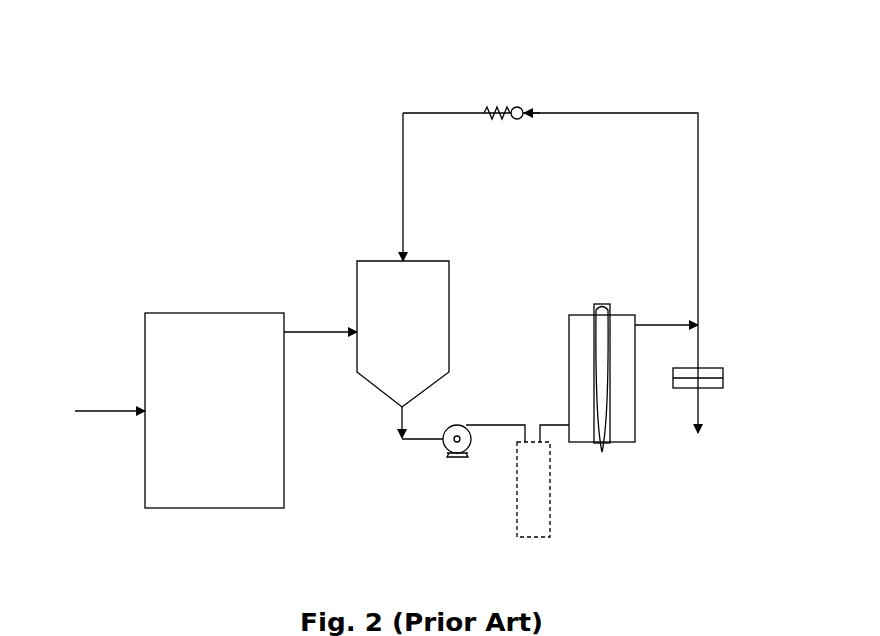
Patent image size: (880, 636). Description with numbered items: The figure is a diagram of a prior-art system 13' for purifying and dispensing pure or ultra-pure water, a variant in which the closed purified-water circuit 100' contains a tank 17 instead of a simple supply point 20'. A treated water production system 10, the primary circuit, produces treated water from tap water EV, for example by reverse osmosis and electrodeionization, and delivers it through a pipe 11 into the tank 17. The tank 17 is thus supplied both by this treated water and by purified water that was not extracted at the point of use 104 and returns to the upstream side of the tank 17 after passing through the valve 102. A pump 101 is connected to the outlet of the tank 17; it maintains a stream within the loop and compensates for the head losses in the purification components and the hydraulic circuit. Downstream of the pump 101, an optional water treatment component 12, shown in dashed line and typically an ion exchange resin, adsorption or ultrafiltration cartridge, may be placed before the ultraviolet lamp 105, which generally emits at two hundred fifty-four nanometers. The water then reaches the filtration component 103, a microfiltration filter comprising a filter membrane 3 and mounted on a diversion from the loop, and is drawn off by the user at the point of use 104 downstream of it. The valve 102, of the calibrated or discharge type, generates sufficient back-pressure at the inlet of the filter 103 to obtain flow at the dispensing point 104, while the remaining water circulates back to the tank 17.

The system for purifying and dispensing water 13' is at (640, 39).
The treated water production system 10 is at (145, 444).
The tap water EV is at (91, 412).
The pipe 11 is at (320, 332).
The supply point 20' is at (334, 307).
The tank 17 is at (372, 261).
The pump 101 is at (450, 453).
The component for water treatment 12 is at (550, 527).
The ultraviolet lamp 105 is at (612, 444).
The circuit 100' is at (590, 273).
The valve 102 is at (520, 107).
The filtration component 103 is at (723, 370).
The filter membrane 3 is at (678, 389).
The point of use 104 is at (704, 418).